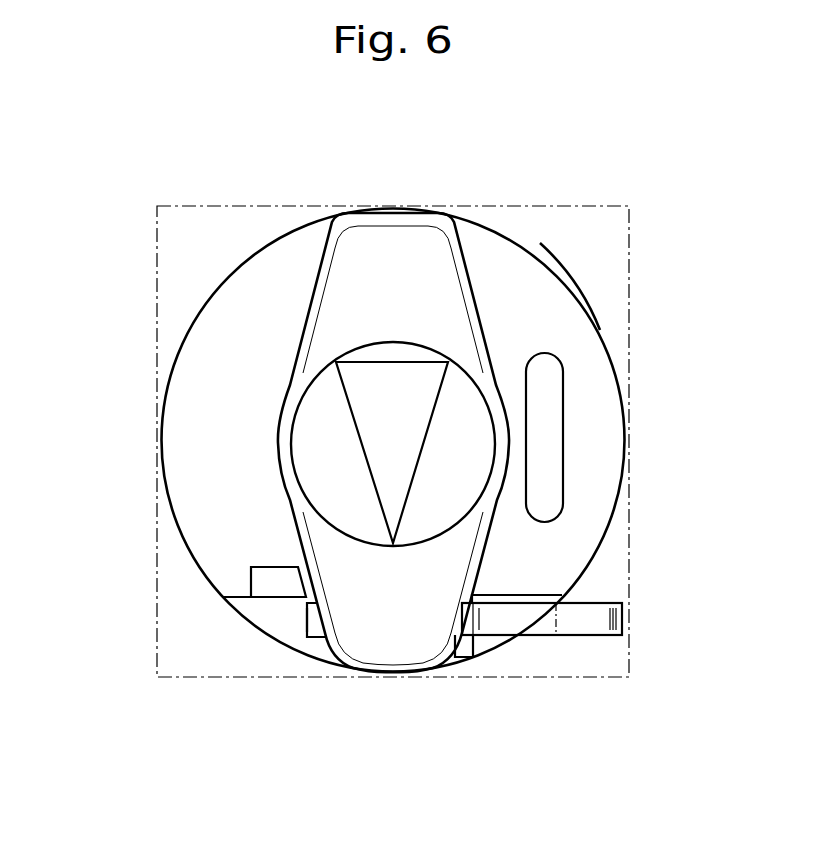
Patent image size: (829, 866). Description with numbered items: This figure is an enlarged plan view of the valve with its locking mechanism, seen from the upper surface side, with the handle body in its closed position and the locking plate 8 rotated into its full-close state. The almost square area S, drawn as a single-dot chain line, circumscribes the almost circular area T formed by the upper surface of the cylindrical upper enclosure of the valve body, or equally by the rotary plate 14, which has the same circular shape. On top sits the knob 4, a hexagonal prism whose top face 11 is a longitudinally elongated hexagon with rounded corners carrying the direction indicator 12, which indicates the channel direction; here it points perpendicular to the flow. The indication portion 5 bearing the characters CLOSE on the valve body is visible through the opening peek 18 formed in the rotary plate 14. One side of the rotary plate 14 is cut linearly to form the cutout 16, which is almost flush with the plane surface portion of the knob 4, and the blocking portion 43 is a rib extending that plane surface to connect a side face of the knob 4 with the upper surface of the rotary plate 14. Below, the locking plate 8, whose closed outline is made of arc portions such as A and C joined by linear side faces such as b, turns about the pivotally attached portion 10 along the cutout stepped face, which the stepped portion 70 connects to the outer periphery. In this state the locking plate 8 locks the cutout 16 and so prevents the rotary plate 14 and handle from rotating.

The knob 4 is at (422, 250).
The top face 11 is at (359, 282).
The direction indicator 12 is at (313, 408).
The rotary plate 14 is at (188, 432).
The blocking portion 43 is at (266, 581).
The cutout 16 is at (253, 597).
The stepped portion 70 is at (314, 645).
The pivotally attached portion 10 is at (462, 648).
The locking plate 8 is at (583, 620).
The indication portion 5 is at (554, 450).
The opening peek 18 is at (552, 494).
The square area S is at (629, 240).
The circular area T is at (575, 297).
The arc portion A is at (622, 620).
The linear side face b is at (514, 630).
The arc portion C is at (303, 621).